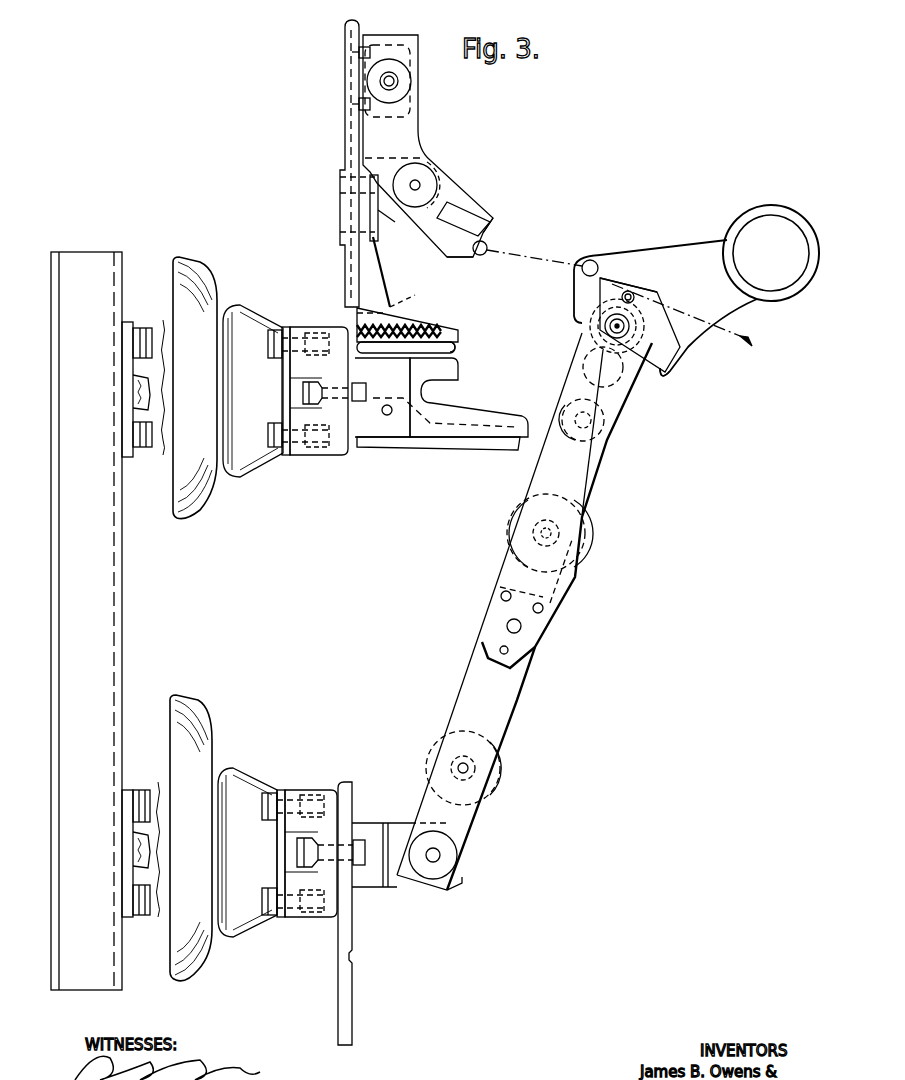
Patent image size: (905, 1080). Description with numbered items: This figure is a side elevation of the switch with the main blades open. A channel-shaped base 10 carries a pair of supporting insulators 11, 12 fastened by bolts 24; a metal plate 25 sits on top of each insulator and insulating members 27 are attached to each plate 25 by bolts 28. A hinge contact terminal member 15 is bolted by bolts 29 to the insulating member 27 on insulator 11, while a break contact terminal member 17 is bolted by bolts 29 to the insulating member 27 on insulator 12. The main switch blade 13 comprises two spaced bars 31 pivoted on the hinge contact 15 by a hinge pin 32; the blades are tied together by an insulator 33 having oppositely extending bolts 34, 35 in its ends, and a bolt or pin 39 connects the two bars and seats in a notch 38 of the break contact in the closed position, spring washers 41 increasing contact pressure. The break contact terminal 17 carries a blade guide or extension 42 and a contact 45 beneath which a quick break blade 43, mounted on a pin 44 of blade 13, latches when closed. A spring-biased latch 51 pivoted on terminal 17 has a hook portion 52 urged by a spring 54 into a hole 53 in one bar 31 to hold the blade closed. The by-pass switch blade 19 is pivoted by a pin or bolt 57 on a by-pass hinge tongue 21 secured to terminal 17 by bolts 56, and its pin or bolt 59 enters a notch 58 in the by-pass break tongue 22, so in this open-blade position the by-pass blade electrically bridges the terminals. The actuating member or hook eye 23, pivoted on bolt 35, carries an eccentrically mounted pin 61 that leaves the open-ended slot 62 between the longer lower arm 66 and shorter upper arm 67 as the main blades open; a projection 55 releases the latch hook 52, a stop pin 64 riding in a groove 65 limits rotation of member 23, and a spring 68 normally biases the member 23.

The channel-shaped base 10 is at (122, 612).
The supporting insulator 11 is at (192, 965).
The supporting insulator 12 is at (188, 505).
The switch blade 13 is at (470, 639).
The hinge contact terminal member 15 is at (382, 890).
The break contact terminal member 17 is at (345, 152).
The by-pass switch blade 19 is at (418, 130).
The by-pass hinge tongue 21 is at (342, 176).
The by-pass break tongue 22 is at (410, 106).
The actuating member or hook eye 23 is at (762, 300).
The bolts 24 is at (143, 330).
The metal plate 25 is at (286, 455).
The insulating member 27 is at (336, 455).
The bolts 28 is at (276, 330).
The bolts 29 is at (366, 392).
The spaced bars 31 is at (512, 710).
The hinge pin 32 is at (440, 858).
The insulator 33 is at (508, 528).
The bolt 34 is at (560, 532).
The bolt 35 is at (470, 768).
The notch 38 is at (440, 394).
The bolt or pin 39 is at (573, 438).
The spring washers 41 is at (455, 848).
The blade guides or extensions 42 is at (524, 420).
The quick break blade 43 is at (580, 483).
The pin 44 is at (520, 630).
The contact 45 is at (432, 325).
The spring-biased latch 51 is at (395, 352).
The hook portion 52 is at (458, 347).
The hole 53 is at (615, 396).
The spring 54 is at (397, 273).
The projection 55 is at (673, 378).
The bolts 56 is at (378, 228).
The pin or bolt 57 is at (420, 181).
The notch 58 is at (411, 74).
The pin or bolt 59 is at (398, 84).
The eccentrically mounted pin 61 is at (487, 246).
The open-ended slot 62 is at (455, 212).
The stop pin 64 is at (630, 290).
The groove 65 is at (590, 305).
The lower arm 66 is at (462, 258).
The upper arm 67 is at (493, 218).
The spring 68 is at (668, 320).